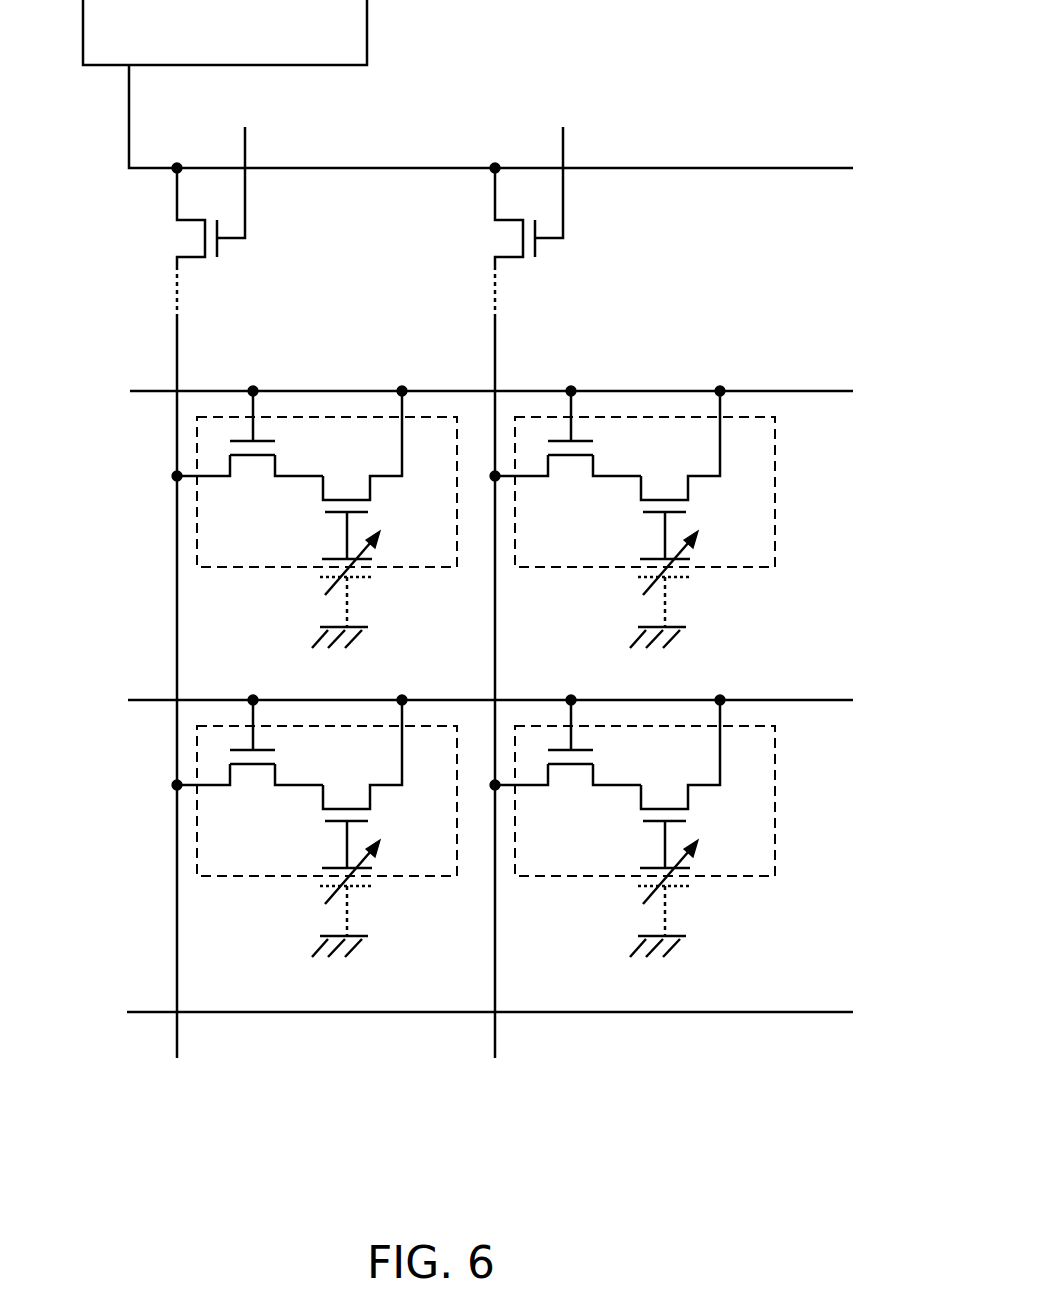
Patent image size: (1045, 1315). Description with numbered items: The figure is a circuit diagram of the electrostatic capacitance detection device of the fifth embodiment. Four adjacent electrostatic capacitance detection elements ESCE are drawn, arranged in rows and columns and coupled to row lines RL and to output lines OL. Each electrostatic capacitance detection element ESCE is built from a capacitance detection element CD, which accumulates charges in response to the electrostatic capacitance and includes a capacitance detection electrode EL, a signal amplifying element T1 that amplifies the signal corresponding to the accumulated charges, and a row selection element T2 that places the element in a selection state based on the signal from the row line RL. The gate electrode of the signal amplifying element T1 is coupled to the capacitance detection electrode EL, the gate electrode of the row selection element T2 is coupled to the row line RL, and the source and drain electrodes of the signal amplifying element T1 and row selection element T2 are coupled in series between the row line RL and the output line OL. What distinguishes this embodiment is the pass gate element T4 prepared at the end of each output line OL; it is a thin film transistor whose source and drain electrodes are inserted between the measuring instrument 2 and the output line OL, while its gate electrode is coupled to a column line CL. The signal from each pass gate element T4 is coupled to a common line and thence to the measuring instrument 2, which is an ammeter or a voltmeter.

The measuring instrument 2 is at (370, 33).
The pass gate element T4 is at (227, 247).
The signal amplifying element T1 is at (347, 488).
The row selection element T2 is at (252, 472).
The capacitance detection electrode EL is at (501, 745).
The capacitance detection element CD is at (381, 560).
The electrostatic capacitance detection element ESCE is at (526, 678).
The column line CL is at (414, 157).
The output line OL is at (397, 688).
The row line RL is at (445, 691).